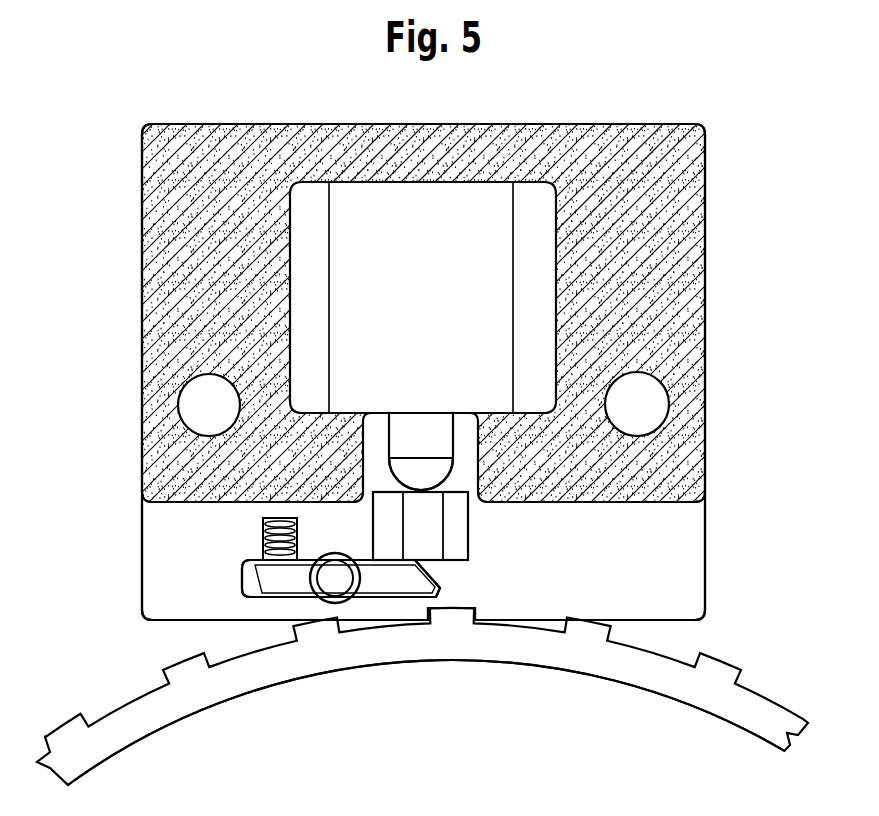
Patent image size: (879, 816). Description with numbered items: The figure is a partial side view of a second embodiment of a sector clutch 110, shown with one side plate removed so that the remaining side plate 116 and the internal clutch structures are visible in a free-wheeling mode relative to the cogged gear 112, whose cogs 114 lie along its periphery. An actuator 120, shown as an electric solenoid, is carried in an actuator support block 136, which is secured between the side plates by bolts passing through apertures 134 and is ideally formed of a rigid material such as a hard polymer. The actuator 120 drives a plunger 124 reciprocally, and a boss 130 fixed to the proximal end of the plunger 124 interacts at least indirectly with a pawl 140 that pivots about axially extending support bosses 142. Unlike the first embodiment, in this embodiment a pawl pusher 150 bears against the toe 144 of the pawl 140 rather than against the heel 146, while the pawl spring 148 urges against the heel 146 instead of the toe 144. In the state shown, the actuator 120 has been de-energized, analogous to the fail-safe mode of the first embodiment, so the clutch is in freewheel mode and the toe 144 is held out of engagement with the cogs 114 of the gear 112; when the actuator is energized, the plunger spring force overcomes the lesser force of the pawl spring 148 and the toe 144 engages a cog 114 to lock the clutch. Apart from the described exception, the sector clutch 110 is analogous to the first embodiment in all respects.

The sector clutch 110 is at (716, 338).
The gear 112 is at (688, 706).
The cog 114 is at (722, 672).
The side plate 116 is at (705, 547).
The actuator 120 is at (535, 263).
The plunger 124 is at (437, 439).
The boss 130 is at (408, 473).
The apertures 134 is at (665, 405).
The actuator support block 136 is at (657, 150).
The pawl 140 is at (369, 576).
The support bosses 142 is at (338, 586).
The toe 144 is at (422, 583).
The heel 146 is at (263, 580).
The pawl spring 148 is at (263, 532).
The pawl pusher 150 is at (470, 522).